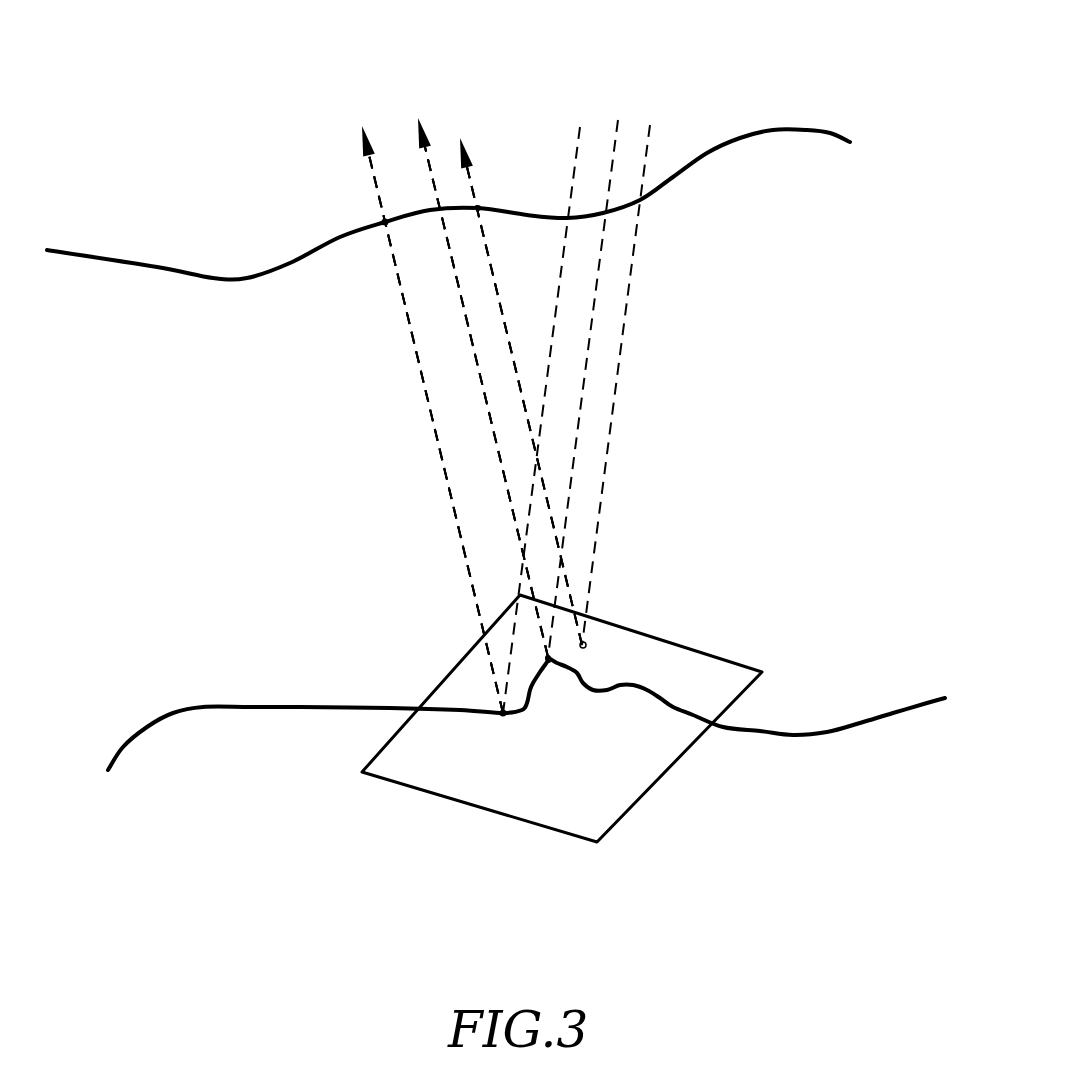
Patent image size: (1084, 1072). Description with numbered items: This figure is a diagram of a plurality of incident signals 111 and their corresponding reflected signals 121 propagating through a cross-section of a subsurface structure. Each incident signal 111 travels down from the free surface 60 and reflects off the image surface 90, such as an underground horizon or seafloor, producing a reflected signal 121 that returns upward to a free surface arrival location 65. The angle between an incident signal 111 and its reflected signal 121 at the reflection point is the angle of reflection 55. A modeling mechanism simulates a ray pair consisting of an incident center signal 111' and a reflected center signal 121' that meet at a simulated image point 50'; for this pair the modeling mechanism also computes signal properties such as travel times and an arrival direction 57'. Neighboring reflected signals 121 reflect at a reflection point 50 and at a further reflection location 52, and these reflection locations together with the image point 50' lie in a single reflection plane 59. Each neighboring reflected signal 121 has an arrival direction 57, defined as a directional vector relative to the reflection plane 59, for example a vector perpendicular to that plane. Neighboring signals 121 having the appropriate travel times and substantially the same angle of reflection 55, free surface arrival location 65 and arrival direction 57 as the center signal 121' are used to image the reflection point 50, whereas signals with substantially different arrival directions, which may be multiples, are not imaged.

The free surface 60 is at (830, 133).
The image surface 90 is at (887, 716).
The reflection plane 59 is at (477, 808).
The free surface arrival location 65 is at (386, 222).
The reflected signal 121 is at (451, 434).
The center signal 121' is at (433, 402).
The arrival direction 57 is at (475, 434).
The arrival direction 57' is at (487, 402).
The incident signal 111 is at (629, 389).
The center signal 111' is at (615, 336).
The angle of reflection 55 is at (495, 588).
The reflection location 52 is at (587, 645).
The reflection point 50 is at (654, 637).
The image point 50' is at (637, 731).